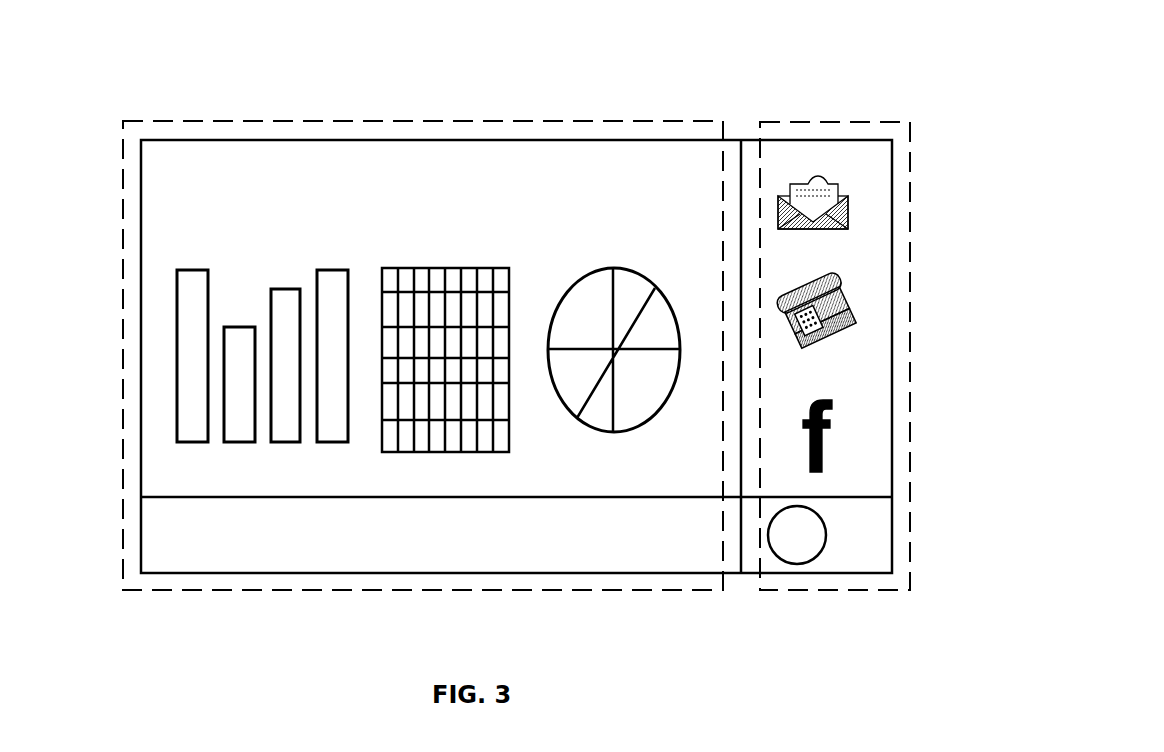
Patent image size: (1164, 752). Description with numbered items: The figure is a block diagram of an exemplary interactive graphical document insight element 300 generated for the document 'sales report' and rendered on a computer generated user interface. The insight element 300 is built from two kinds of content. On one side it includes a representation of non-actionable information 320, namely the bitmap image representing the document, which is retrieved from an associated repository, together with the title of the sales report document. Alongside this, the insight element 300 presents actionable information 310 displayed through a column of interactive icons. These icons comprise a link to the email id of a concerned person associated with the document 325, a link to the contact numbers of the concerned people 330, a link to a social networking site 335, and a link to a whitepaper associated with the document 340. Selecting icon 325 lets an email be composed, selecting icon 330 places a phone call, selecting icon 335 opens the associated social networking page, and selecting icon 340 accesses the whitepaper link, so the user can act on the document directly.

The interactive graphical document insight element 300 is at (1025, 123).
The actionable information displayed through interactive icons 310 is at (870, 120).
The representation of non-actionable information 320 is at (609, 121).
The interactive icon linking to an email id 325 is at (810, 195).
The interactive icon linking to contact numbers 330 is at (820, 287).
The interactive icon linking to a social networking site 335 is at (822, 397).
The interactive icon linking to a whitepaper 340 is at (813, 537).